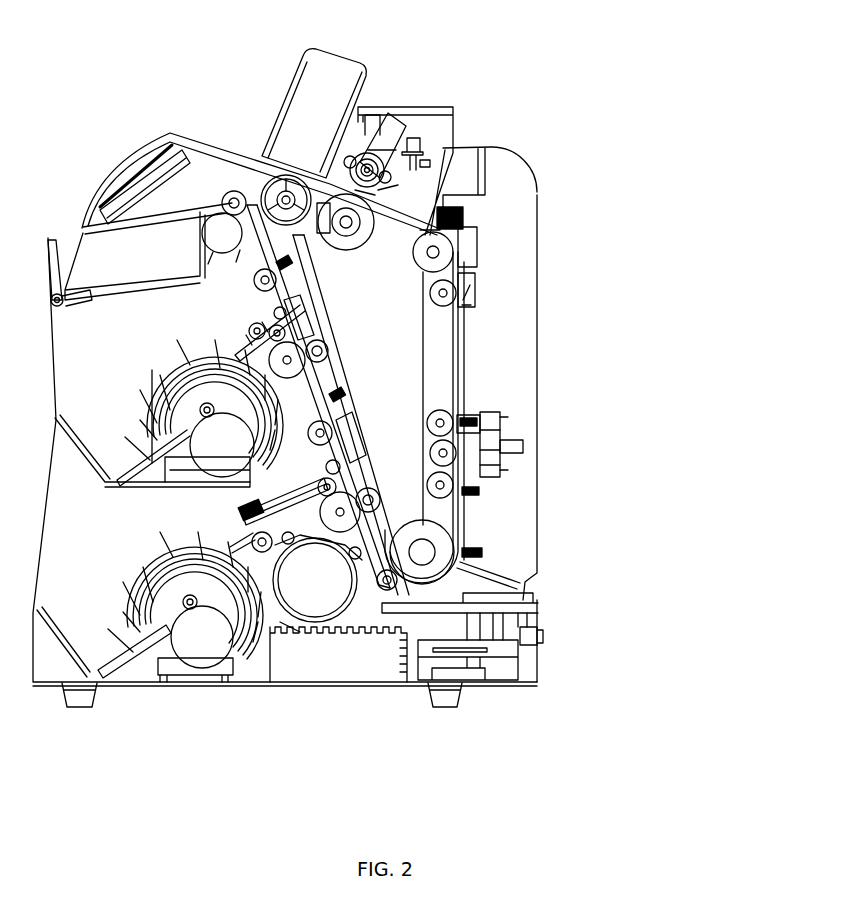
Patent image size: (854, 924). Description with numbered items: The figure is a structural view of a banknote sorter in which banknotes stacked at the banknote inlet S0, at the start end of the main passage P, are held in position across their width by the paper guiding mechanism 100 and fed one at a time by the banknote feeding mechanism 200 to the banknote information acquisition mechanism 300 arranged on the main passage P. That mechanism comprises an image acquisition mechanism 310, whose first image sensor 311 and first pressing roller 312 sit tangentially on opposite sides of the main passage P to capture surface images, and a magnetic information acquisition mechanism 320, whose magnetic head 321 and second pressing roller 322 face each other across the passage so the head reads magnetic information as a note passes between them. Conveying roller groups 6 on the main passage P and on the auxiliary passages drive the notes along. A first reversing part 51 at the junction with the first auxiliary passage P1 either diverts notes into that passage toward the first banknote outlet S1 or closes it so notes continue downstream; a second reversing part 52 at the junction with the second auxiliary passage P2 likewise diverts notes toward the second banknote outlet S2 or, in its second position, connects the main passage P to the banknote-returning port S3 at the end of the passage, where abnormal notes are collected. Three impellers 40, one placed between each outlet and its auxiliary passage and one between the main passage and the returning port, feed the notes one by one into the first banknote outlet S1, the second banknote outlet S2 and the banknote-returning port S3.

The paper guiding mechanism 100 is at (310, 98).
The banknote feeding mechanism 200 is at (368, 150).
The banknote information acquisition mechanism 300 is at (737, 398).
The image acquisition mechanism 310 is at (633, 245).
The first image sensor 311 is at (470, 297).
The first pressing roller 312 is at (472, 310).
The magnetic information acquisition mechanism 320 is at (640, 443).
The magnetic head 321 is at (470, 457).
The second pressing roller 322 is at (508, 436).
The impeller 40 is at (218, 229).
The first reversing part 51 is at (350, 447).
The second reversing part 52 is at (296, 327).
The conveying roller group 6 is at (330, 352).
The banknote inlet S0 is at (261, 163).
The first banknote outlet S1 is at (169, 605).
The second banknote outlet S2 is at (169, 413).
The banknote-returning port S3 is at (126, 259).
The main passage P is at (463, 517).
The first auxiliary passage P1 is at (265, 507).
The second auxiliary passage P2 is at (257, 334).